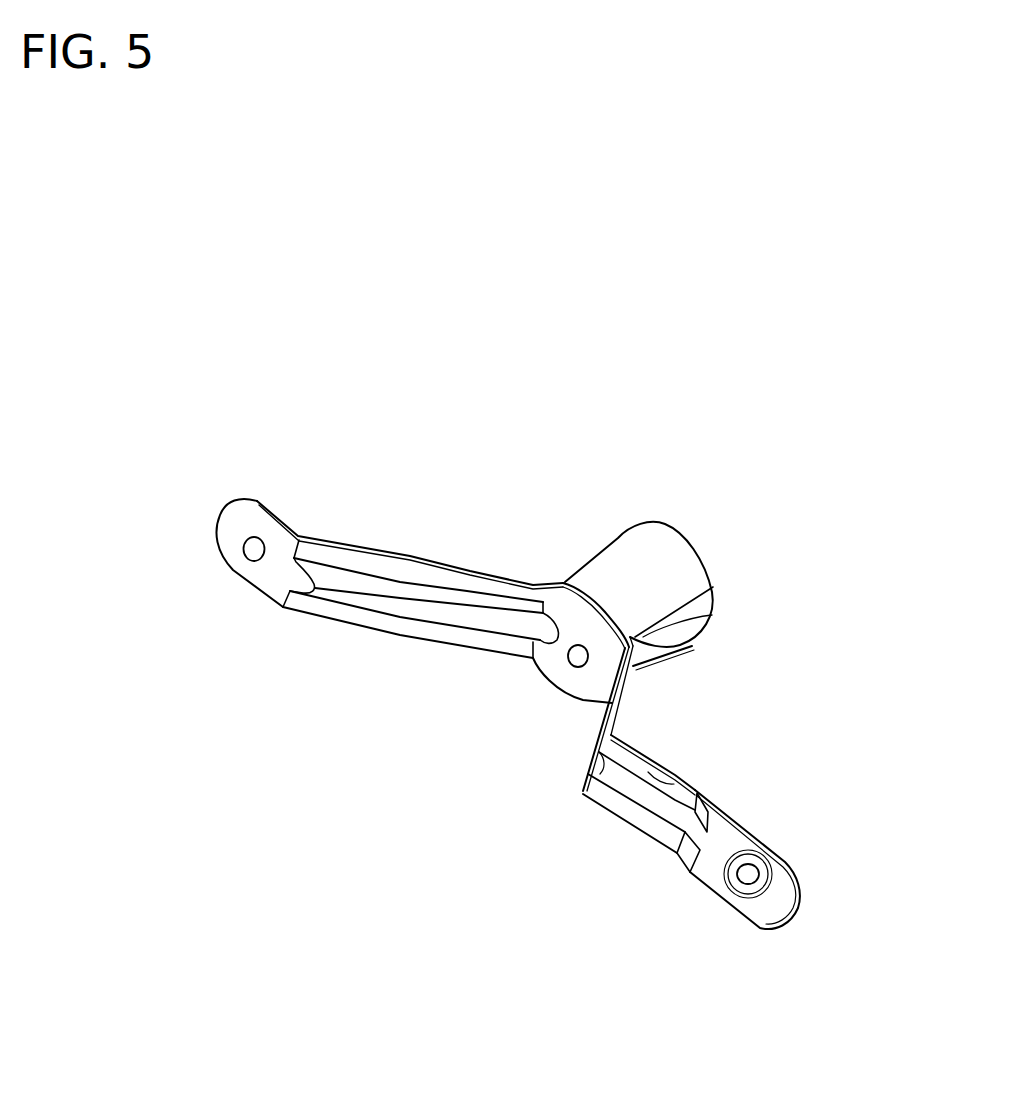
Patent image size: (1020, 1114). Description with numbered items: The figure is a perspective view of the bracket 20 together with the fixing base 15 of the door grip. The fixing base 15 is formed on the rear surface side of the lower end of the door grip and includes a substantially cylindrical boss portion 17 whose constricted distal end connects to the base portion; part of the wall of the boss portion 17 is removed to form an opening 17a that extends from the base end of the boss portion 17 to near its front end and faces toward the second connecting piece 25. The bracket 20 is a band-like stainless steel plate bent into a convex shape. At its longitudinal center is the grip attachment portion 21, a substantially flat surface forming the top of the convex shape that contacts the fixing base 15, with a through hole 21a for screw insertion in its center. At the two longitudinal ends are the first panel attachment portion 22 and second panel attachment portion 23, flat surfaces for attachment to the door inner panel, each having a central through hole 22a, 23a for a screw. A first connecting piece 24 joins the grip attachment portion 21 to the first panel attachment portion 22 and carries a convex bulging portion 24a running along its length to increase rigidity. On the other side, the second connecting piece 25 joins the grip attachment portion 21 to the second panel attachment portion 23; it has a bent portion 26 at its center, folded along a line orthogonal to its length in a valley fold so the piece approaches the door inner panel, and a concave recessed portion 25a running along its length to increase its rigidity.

The fixing base 15 is at (592, 527).
The boss portion 17 is at (654, 540).
The opening 17a is at (713, 608).
The bracket 20 is at (325, 661).
The grip attachment portion 21 is at (632, 676).
The through hole 21a is at (570, 664).
The first panel attachment portion 22 is at (257, 577).
The through hole 22a is at (223, 552).
The second panel attachment portion 23 is at (797, 913).
The through hole 23a is at (733, 877).
The first connecting piece 24 is at (352, 565).
The bulging portion 24a is at (400, 607).
The second connecting piece 25 is at (687, 784).
The recessed portion 25a is at (627, 787).
The bent portion 26 is at (582, 786).